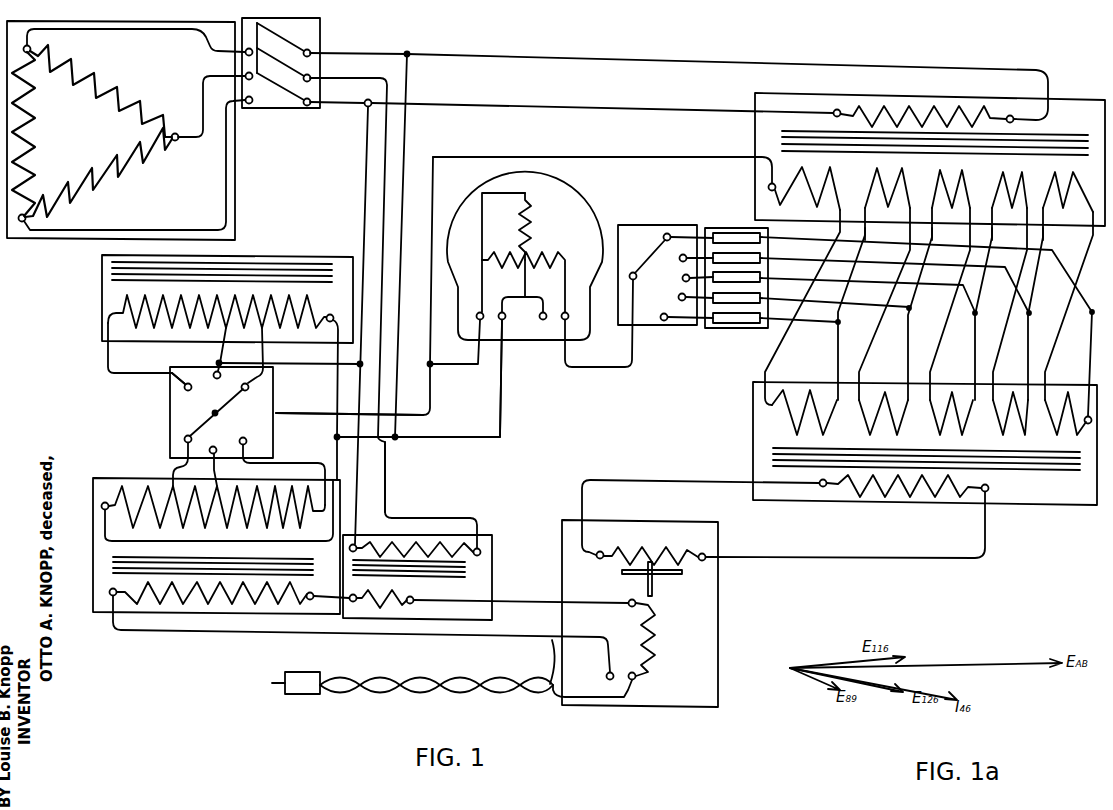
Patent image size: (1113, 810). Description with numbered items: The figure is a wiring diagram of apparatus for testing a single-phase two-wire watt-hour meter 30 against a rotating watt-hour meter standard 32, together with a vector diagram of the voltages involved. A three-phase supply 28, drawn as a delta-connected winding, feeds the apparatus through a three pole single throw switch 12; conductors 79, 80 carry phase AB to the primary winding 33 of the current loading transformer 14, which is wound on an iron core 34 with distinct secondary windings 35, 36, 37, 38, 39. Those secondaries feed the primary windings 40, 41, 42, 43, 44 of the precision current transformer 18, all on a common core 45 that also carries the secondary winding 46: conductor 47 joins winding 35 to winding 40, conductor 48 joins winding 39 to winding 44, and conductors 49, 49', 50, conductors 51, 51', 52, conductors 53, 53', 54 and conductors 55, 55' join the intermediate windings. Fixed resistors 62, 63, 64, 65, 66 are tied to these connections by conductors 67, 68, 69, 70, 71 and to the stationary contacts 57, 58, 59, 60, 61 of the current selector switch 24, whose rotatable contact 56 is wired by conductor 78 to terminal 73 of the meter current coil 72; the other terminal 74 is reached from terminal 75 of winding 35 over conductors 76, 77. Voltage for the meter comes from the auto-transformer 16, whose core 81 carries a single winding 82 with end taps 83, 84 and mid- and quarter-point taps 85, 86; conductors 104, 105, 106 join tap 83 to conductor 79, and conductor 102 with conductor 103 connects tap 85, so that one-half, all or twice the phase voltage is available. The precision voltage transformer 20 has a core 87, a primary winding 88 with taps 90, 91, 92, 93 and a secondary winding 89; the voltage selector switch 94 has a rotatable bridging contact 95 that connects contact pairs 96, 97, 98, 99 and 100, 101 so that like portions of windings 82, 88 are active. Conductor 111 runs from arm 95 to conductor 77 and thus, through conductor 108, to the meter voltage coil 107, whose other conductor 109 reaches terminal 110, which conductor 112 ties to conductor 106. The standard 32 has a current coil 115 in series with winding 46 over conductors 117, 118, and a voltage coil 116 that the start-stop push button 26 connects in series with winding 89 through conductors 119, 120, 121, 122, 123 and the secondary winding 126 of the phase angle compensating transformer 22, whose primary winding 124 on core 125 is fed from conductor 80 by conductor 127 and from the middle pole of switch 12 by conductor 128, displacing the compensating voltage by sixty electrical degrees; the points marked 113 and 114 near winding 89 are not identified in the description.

The three-pole switch 12 is at (300, 100).
The transformer primary unit 14 is at (1065, 98).
The saturable reactor 16 is at (308, 258).
The transformer secondary unit 18 is at (750, 398).
The saturable reactor 20 is at (100, 480).
The transformer 22 is at (482, 560).
The selector switch 24 is at (624, 232).
The plug 26 is at (298, 694).
The motor 28 is at (10, 226).
The control device 30 is at (578, 196).
The rectifier unit 32 is at (708, 626).
The resistor 33 is at (940, 98).
The core 34 is at (1085, 118).
The primary winding 35 is at (820, 174).
The primary winding 36 is at (887, 174).
The primary winding 37 is at (947, 174).
The primary winding 38 is at (997, 178).
The primary winding 39 is at (1050, 178).
The secondary winding 40 is at (826, 410).
The secondary winding 41 is at (898, 410).
The secondary winding 42 is at (960, 410).
The secondary winding 43 is at (1008, 412).
The secondary winding terminal 44 is at (1072, 418).
The winding 45 is at (1060, 470).
The terminal 46 is at (968, 486).
The conductor 47 is at (780, 348).
The conductor 48 is at (1068, 336).
The conductor 49 is at (836, 304).
The conductor 50 is at (868, 334).
The conductor 51 is at (908, 304).
The conductor 52 is at (928, 334).
The conductor 53 is at (971, 304).
The conductor 54 is at (1018, 334).
The conductor 55 is at (1025, 304).
The conductor 49' is at (884, 233).
The conductor 51' is at (941, 233).
The conductor 53' is at (1001, 233).
The conductor 55' is at (1056, 233).
The switch blade 56 is at (640, 262).
The contact 57 is at (660, 335).
The contact 58 is at (677, 298).
The contact 59 is at (681, 278).
The contact 60 is at (684, 258).
The contact 61 is at (662, 236).
The relay coil 62 is at (720, 337).
The relay coil 63 is at (811, 296).
The relay coil 64 is at (844, 289).
The relay coil 65 is at (871, 279).
The relay coil 66 is at (768, 240).
The junction 67 is at (836, 322).
The junction 68 is at (908, 308).
The junction 69 is at (973, 312).
The junction 70 is at (1027, 312).
The junction 71 is at (1090, 311).
The resistor 72 is at (528, 258).
The terminal 73 is at (570, 318).
The terminal 74 is at (483, 312).
The terminal 75 is at (768, 188).
The conductor 76 is at (617, 158).
The conductor 77 is at (478, 380).
The conductor 78 is at (614, 370).
The conductor 79 is at (595, 60).
The conductor 80 is at (595, 107).
The core 81 is at (150, 276).
The winding 82 is at (285, 297).
The terminal 83 is at (345, 306).
The conductor 84 is at (107, 352).
The tap conductor 85 is at (217, 348).
The tap conductor 86 is at (262, 342).
The core 87 is at (118, 557).
The terminal 88 is at (98, 494).
The winding 89 is at (190, 600).
The conductor 90 is at (212, 468).
The conductor 91 is at (172, 468).
The conductor 92 is at (314, 462).
The winding 93 is at (104, 524).
The contact 94 is at (180, 389).
The switch blade 95 is at (212, 413).
The contact 96 is at (250, 388).
The switch 97 is at (182, 440).
The contact 98 is at (184, 396).
The contact 99 is at (256, 446).
The contact 100 is at (230, 386).
The contact 101 is at (228, 450).
The conductor 102 is at (306, 368).
The conductor 103 is at (366, 175).
The conductor 104 is at (326, 410).
The conductor 105 is at (419, 390).
The conductor 106 is at (404, 136).
The resistor 107 is at (530, 218).
The conductor 108 is at (482, 228).
The tap 109 is at (526, 276).
The winding 110 is at (523, 314).
The conductor 111 is at (380, 402).
The conductor 112 is at (500, 392).
The terminal 113 is at (120, 590).
The conductor 114 is at (316, 598).
The resistor 115 is at (680, 550).
The resistor 116 is at (654, 620).
The conductor and slider 117 is at (690, 478).
The conductor 118 is at (805, 556).
The conductor 119 is at (546, 602).
The conductor 120 is at (546, 636).
The terminal 121 is at (606, 654).
The conductor 122 is at (556, 700).
The terminal 123 is at (328, 594).
The winding 124 is at (460, 545).
The core 125 is at (455, 574).
The winding 126 is at (398, 594).
The conductor 127 is at (399, 477).
The conductor 128 is at (448, 518).